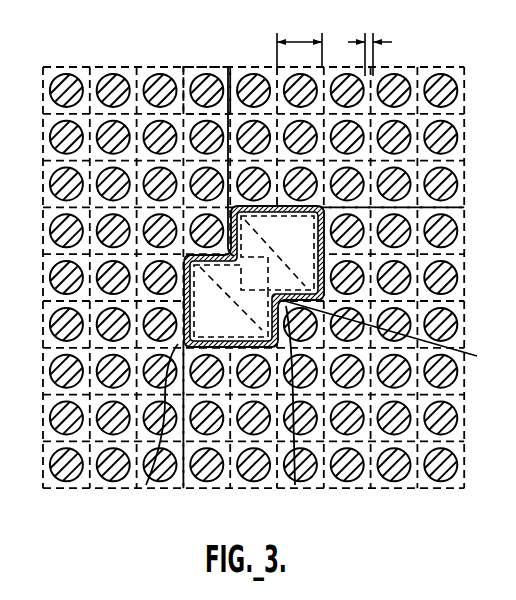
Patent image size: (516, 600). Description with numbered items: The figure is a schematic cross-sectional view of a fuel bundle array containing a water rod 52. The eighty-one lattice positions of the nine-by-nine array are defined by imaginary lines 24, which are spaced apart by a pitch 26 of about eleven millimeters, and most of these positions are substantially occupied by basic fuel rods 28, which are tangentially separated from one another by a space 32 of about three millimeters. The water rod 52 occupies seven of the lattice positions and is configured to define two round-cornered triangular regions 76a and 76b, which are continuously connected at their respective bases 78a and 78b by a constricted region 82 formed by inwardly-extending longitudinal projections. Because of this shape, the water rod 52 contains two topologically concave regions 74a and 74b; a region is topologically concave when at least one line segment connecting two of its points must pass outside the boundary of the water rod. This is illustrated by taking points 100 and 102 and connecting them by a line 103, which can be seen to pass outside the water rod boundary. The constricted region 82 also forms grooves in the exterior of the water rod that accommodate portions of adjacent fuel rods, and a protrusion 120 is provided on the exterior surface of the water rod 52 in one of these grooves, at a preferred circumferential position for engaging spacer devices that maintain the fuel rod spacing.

The point 100 is at (187, 256).
The line 103 is at (134, 110).
The water rod 52 is at (187, 253).
The imaginary lines 24 is at (185, 67).
The point 102 is at (228, 66).
The pitch 26 is at (297, 40).
The space 32 is at (369, 35).
The fuel rods 28 is at (441, 89).
The round-cornered triangular region 76b is at (447, 212).
The round-cornered triangular region 76a is at (181, 488).
The base 78a is at (249, 299).
The base 78b is at (268, 253).
The constricted region 82 is at (242, 283).
The protrusion 120 is at (395, 336).
The topologically concave region 74a is at (146, 485).
The topologically concave region 74b is at (295, 485).